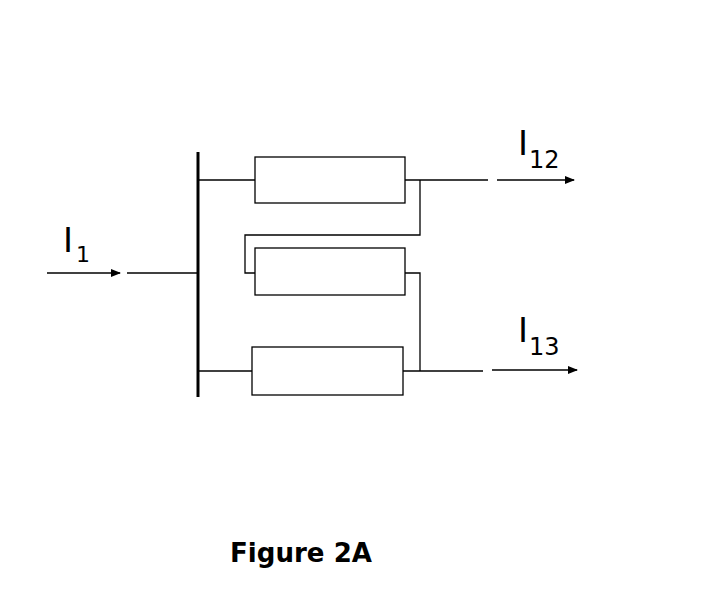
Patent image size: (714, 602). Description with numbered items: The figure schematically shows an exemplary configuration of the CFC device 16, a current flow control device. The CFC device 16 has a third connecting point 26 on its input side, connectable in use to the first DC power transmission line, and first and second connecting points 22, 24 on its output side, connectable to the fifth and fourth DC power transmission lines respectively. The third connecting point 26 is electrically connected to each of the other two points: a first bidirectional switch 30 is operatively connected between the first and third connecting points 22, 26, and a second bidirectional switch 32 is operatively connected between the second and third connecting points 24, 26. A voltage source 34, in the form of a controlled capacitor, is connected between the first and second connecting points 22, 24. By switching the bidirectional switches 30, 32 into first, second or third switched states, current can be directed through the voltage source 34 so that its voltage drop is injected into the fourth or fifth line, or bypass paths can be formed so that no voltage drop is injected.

The CFC device 16 is at (213, 132).
The first connecting point 22 is at (418, 377).
The second connecting point 24 is at (418, 200).
The third connecting point 26 is at (190, 282).
The first bidirectional switch 30 is at (327, 371).
The second bidirectional switch 32 is at (330, 180).
The voltage source 34 is at (330, 271).